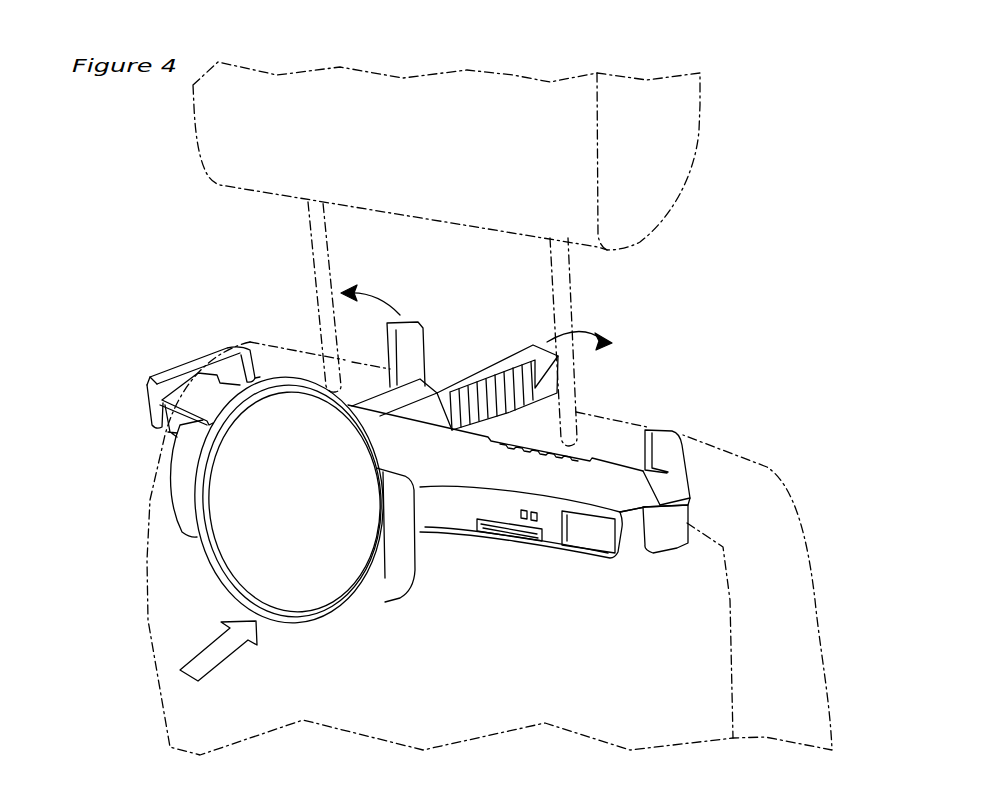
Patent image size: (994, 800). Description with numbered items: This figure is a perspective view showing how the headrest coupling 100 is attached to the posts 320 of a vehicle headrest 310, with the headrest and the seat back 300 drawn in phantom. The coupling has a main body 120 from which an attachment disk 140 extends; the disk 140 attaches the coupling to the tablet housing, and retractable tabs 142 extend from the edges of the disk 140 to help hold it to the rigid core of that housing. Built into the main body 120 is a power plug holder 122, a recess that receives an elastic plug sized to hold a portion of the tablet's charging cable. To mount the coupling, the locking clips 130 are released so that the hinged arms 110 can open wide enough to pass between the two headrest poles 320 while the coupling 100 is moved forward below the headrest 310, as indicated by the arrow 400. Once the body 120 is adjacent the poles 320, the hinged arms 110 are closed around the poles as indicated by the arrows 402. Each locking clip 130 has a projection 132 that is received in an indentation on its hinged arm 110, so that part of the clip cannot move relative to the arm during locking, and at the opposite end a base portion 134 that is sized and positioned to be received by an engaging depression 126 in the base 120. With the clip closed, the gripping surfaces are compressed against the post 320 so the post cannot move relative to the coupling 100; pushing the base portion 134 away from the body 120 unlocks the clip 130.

The headrest coupling 100 is at (548, 520).
The hinged arm 110 is at (417, 326).
The main body 120 is at (195, 382).
The power plug holder 122 is at (478, 532).
The engaging depression 126 is at (585, 542).
The locking clip 130 is at (222, 360).
The projection 132 is at (247, 347).
The base portion 134 is at (660, 543).
The attachment disk 140 is at (233, 517).
The retractable tab 142 is at (395, 580).
The seat back 300 is at (768, 505).
The vehicle headrest 310 is at (683, 140).
The headrest post 320 is at (315, 274).
The arrow 400 is at (210, 652).
The arrow 402 is at (354, 288).